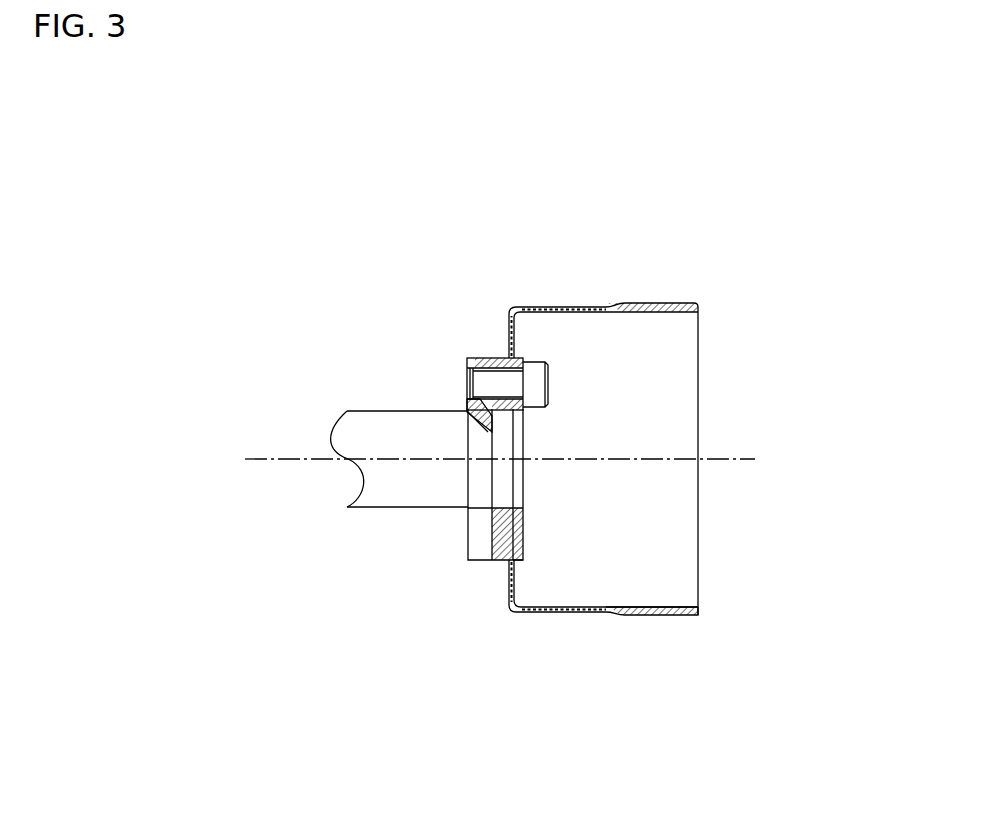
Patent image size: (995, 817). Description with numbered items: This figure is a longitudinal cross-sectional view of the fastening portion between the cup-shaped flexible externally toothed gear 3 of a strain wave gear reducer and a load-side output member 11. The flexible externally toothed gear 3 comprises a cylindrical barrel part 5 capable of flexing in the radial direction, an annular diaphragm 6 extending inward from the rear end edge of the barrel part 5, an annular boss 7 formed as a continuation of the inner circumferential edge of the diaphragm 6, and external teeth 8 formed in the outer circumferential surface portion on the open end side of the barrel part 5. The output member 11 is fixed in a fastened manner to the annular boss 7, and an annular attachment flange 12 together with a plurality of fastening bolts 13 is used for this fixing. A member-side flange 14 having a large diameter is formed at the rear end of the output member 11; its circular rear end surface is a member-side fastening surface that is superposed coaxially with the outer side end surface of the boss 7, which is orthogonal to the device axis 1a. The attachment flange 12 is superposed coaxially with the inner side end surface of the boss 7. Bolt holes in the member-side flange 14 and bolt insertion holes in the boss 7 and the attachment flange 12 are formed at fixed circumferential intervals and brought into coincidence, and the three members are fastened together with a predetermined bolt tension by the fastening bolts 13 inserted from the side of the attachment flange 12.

The device axis 1a is at (262, 460).
The flexible externally toothed gear 3 is at (606, 447).
The cylindrical barrel part 5 is at (581, 615).
The annular diaphragm 6 is at (509, 585).
The annular boss 7 is at (503, 518).
The external teeth 8 is at (667, 617).
The output member 11 is at (345, 497).
The annular attachment flange 12 is at (532, 557).
The fastening bolts 13 is at (552, 382).
The member-side flange 14 is at (462, 405).